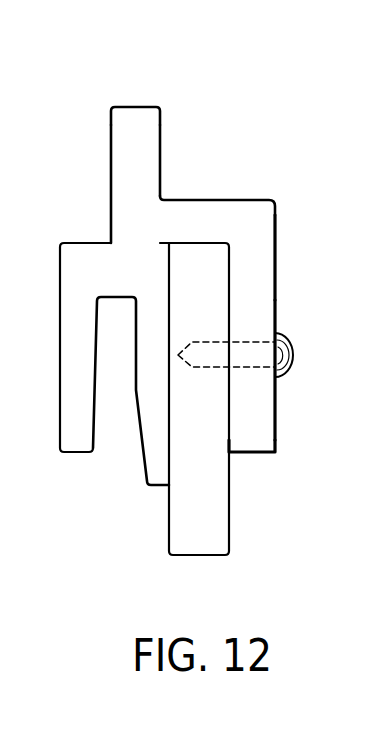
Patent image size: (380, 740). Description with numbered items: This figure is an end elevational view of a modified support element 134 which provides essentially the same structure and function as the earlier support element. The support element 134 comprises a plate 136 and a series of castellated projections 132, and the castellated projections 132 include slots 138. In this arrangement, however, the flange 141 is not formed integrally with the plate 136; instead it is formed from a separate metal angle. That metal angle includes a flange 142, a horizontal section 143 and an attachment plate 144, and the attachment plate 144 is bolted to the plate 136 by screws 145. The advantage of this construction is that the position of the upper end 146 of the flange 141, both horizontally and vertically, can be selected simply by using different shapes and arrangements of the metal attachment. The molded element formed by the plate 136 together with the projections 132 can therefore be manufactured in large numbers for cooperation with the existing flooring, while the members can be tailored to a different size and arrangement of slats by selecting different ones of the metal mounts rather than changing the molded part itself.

The castellated projections 132 is at (83, 241).
The support element 134 is at (270, 461).
The plate 136 is at (222, 520).
The slots 138 is at (102, 396).
The flange 141 is at (283, 217).
The flange 142 is at (149, 153).
The horizontal section 143 is at (205, 210).
The attachment plate 144 is at (262, 291).
The screws 145 is at (288, 345).
The upper end 146 is at (140, 107).